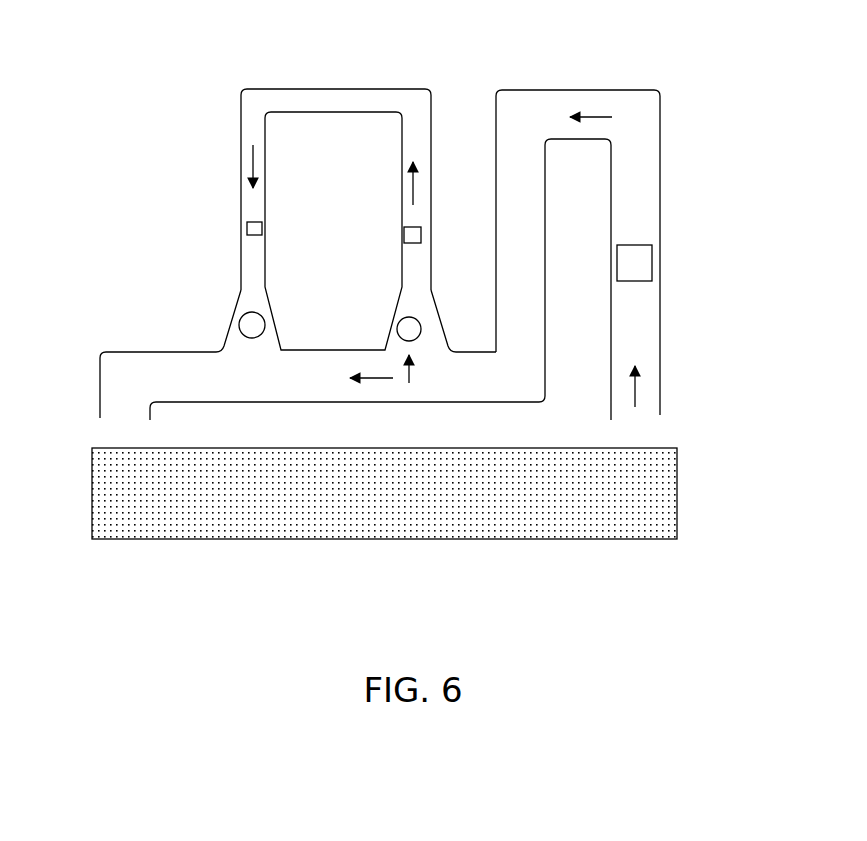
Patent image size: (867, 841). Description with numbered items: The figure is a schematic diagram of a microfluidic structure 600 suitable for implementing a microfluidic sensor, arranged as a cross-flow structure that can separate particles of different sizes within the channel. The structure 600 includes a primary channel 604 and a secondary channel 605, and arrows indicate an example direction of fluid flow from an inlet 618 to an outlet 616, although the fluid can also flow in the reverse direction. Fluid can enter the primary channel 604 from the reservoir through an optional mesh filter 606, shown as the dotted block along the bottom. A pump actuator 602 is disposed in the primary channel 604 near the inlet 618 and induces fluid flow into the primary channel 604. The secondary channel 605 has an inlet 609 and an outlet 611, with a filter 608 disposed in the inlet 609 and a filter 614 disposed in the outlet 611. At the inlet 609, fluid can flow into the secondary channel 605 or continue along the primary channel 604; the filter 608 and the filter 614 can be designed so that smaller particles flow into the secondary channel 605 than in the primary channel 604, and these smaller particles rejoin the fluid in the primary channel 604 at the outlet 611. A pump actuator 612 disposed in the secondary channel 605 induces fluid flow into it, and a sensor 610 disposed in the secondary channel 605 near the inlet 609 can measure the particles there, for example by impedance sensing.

The microfluidic structure 600 is at (390, 358).
The pump actuator 602 is at (652, 258).
The primary channel 604 is at (573, 90).
The secondary channel 605 is at (332, 112).
The mesh filter 606 is at (632, 540).
The filter 608 is at (397, 330).
The inlet 609 is at (446, 318).
The sensor 610 is at (421, 233).
The outlet 611 is at (234, 322).
The pump actuator 612 is at (247, 228).
The filter 614 is at (264, 338).
The outlet 616 is at (100, 418).
The inlet 618 is at (662, 416).